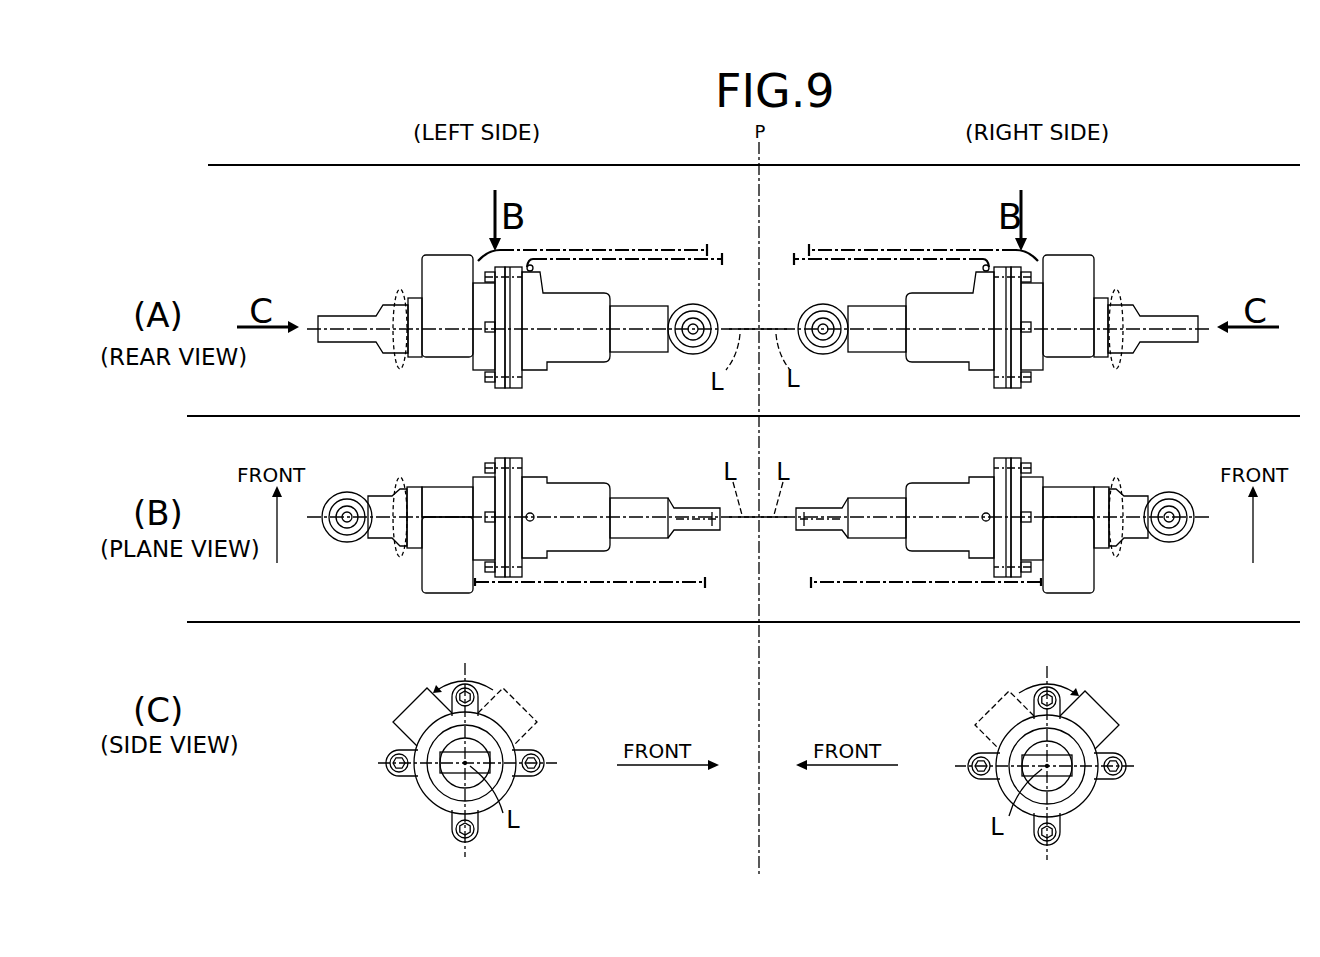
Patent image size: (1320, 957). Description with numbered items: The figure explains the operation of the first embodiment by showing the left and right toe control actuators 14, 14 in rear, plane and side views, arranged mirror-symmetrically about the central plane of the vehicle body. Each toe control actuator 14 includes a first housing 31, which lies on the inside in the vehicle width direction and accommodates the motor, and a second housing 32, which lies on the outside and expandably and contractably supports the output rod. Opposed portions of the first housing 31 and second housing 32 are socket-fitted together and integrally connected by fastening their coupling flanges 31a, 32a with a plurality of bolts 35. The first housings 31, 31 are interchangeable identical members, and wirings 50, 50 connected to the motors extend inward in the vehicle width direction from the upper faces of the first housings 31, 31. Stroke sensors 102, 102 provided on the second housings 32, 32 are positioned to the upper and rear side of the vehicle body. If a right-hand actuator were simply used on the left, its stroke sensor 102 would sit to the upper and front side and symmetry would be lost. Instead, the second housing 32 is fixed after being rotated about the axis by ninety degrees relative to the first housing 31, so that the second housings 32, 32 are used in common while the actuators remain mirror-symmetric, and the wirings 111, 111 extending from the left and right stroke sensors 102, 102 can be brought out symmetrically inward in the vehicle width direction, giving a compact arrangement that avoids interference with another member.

The toe control actuator 14 is at (612, 198).
The first housing 31 is at (605, 568).
The coupling flange 31a is at (520, 458).
The second housing 32 is at (443, 493).
The coupling flange 32a is at (500, 388).
The bolts 35 is at (455, 552).
The wiring 50 is at (657, 261).
The stroke sensor 102 is at (392, 594).
The wiring 111 is at (655, 227).